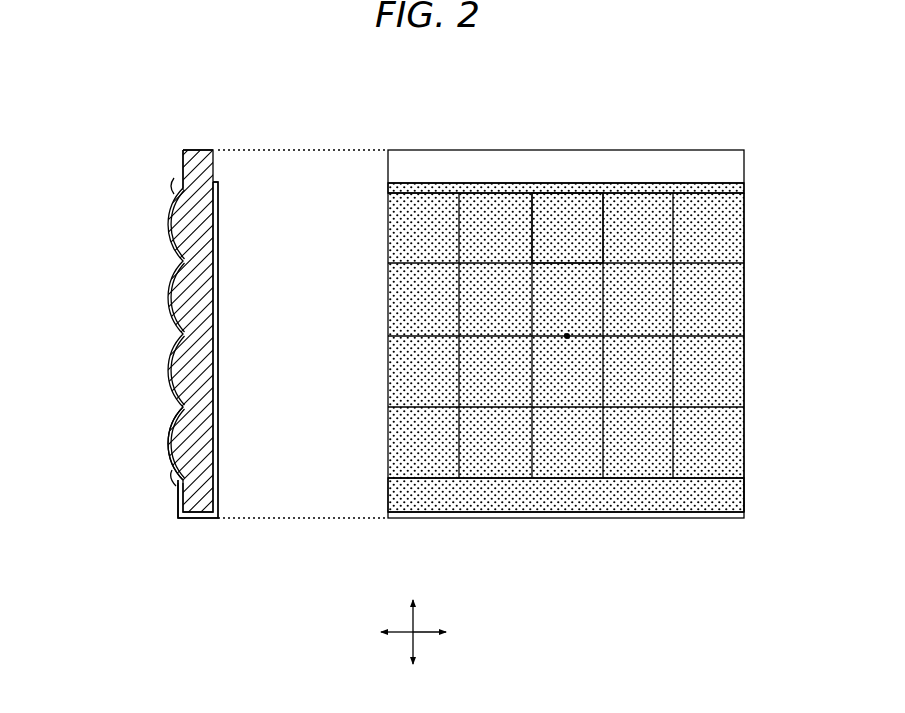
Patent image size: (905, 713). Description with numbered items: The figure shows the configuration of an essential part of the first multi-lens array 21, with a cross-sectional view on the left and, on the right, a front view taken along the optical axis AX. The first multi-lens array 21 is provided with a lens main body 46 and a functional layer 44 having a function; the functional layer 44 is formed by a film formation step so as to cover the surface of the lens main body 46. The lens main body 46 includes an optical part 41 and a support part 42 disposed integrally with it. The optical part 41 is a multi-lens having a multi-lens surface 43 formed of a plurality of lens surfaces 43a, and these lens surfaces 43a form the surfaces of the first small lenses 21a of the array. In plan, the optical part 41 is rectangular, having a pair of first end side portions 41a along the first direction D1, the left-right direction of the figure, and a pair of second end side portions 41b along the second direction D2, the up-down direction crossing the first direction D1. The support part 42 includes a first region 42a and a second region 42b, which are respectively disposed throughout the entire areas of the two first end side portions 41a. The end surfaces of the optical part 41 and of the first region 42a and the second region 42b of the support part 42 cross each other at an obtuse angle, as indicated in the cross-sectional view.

The first multi-lens array 21 is at (188, 140).
The first small lens 21a is at (180, 373).
The optical part 41 is at (160, 300).
The first end side portion 41a is at (175, 188).
The second end side portion 41b is at (745, 443).
The support part 42 is at (150, 582).
The first region 42a is at (207, 512).
The second region 42b is at (203, 150).
The multi-lens surface 43 is at (170, 443).
The lens surface 43a is at (125, 443).
The functional layer 44 is at (170, 230).
The lens main body 46 is at (392, 337).
The optical axis AX is at (567, 336).
The first direction D1 is at (420, 630).
The second direction D2 is at (418, 645).